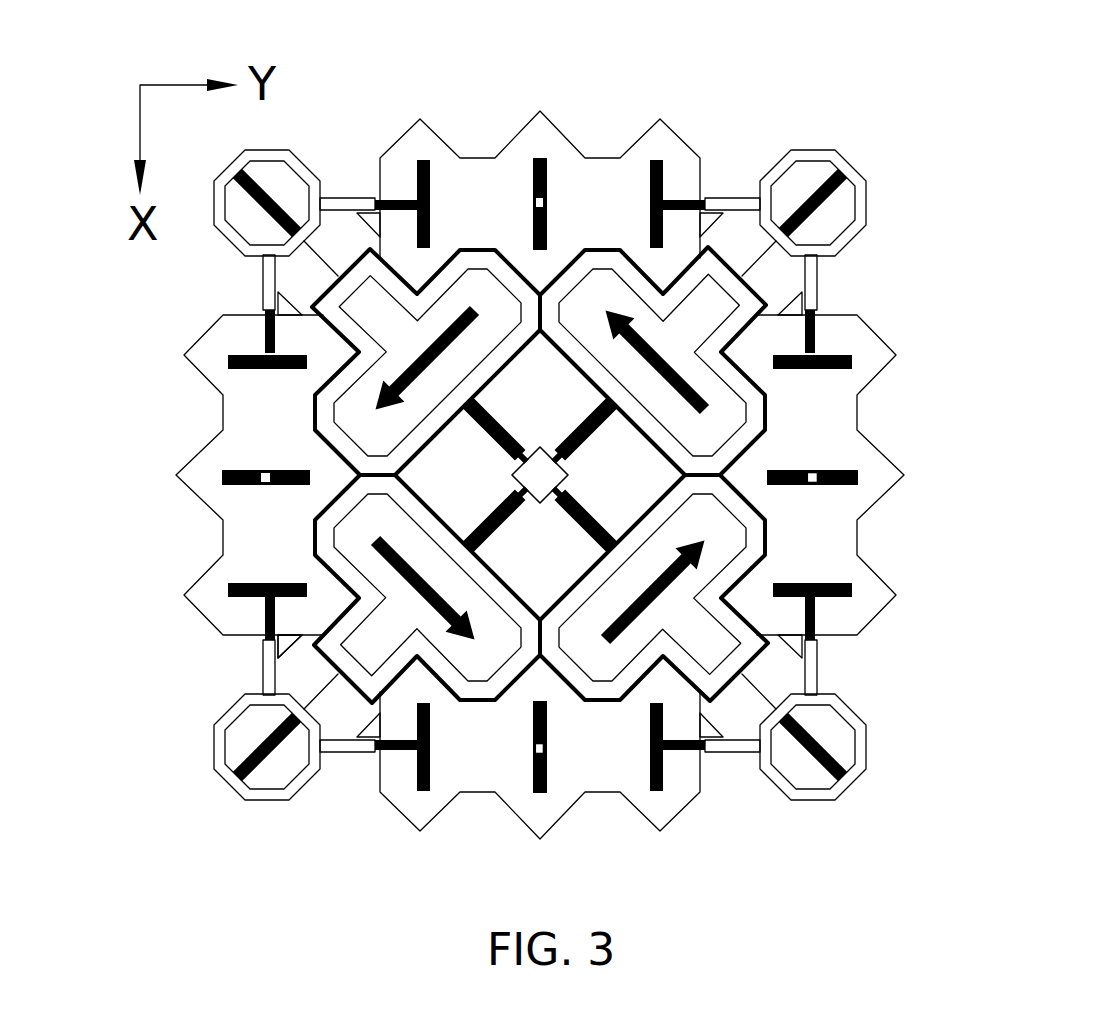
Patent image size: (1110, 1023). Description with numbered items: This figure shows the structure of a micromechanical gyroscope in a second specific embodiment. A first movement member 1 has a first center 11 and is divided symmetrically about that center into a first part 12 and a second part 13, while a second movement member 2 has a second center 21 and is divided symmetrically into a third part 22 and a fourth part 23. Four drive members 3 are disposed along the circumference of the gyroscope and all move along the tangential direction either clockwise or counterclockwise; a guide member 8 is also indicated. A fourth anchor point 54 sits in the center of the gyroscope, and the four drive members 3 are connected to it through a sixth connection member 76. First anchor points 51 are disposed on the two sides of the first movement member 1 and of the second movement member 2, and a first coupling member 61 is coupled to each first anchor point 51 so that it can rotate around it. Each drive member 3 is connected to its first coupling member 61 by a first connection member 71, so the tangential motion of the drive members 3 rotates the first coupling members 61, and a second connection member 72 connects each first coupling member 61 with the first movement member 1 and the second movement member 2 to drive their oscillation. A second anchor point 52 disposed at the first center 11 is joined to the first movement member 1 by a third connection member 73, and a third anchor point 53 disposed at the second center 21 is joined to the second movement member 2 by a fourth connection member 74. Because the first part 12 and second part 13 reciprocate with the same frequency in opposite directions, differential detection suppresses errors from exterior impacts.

The first movement member 1 is at (648, 51).
The first center 11 is at (542, 200).
The first part 12 is at (477, 195).
The second part 13 is at (615, 195).
The second movement member 2 is at (98, 395).
The second center 21 is at (268, 484).
The third part 22 is at (238, 413).
The fourth part 23 is at (238, 562).
The drive member 3 is at (705, 640).
The guide member 8 is at (327, 333).
The first anchor point 51 is at (842, 207).
The second anchor point 52 is at (533, 757).
The third anchor point 53 is at (817, 483).
The fourth anchor point 54 is at (540, 478).
The first coupling member 61 is at (847, 240).
The first connection member 71 is at (753, 257).
The second connection member 72 is at (662, 190).
The third connection member 73 is at (533, 725).
The fourth connection member 74 is at (785, 485).
The sixth connection member 76 is at (292, 656).